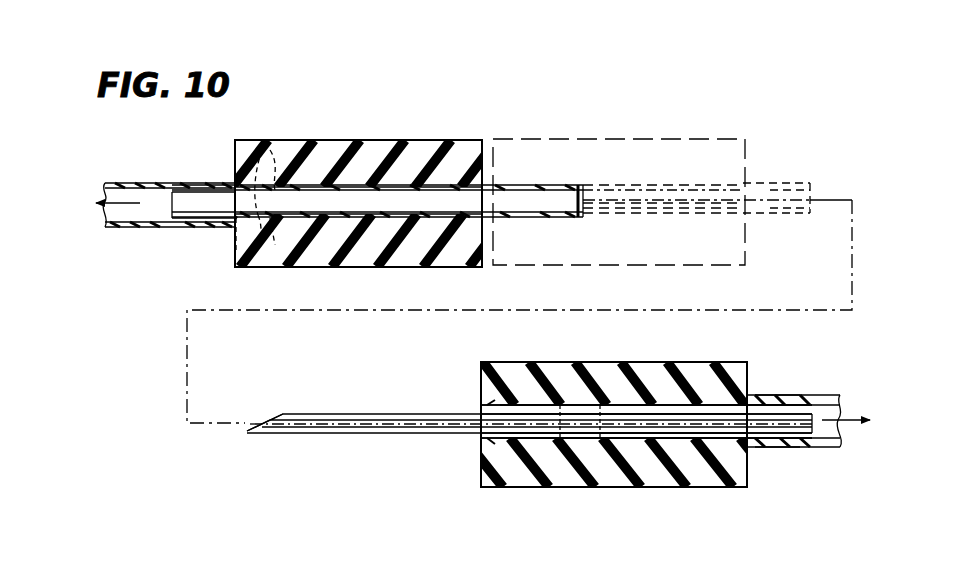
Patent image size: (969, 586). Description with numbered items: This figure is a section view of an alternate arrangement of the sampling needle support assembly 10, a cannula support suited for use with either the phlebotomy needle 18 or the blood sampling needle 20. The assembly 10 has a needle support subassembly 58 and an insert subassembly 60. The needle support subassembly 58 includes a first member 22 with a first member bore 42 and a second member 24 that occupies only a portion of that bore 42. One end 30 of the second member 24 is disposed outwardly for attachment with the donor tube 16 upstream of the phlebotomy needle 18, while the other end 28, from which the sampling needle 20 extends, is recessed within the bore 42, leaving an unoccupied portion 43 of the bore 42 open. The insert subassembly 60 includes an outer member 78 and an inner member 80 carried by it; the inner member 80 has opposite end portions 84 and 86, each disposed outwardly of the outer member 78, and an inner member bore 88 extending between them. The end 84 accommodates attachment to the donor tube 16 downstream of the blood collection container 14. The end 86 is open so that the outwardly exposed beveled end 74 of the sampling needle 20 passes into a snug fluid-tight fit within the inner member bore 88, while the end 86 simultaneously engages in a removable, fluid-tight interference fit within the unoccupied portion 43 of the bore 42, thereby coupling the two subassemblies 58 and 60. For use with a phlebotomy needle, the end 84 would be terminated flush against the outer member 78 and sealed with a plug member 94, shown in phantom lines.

The sampling needle support assembly 10 is at (712, 128).
The blood collection container 14 is at (103, 148).
The donor tube 16 is at (132, 228).
The phlebotomy needle 18 is at (817, 502).
The blood sampling needle 20 is at (418, 195).
The first member 22 is at (722, 160).
The second member 24 is at (715, 215).
The end portion of second member 28 is at (620, 218).
The end portion of second member 30 is at (790, 183).
The first member bore 42 is at (578, 465).
The unoccupied portion of bore 43 is at (553, 222).
The needle support subassembly 58 is at (595, 135).
The insert subassembly 60 is at (398, 128).
The beveled end of sampling needle 74 is at (230, 255).
The outer member 78 is at (270, 267).
The inner member 80 is at (325, 190).
The end portion of inner member 84 is at (196, 228).
The end portion of inner member 86 is at (530, 185).
The inner member bore 88 is at (285, 190).
The plug member 94 is at (265, 160).